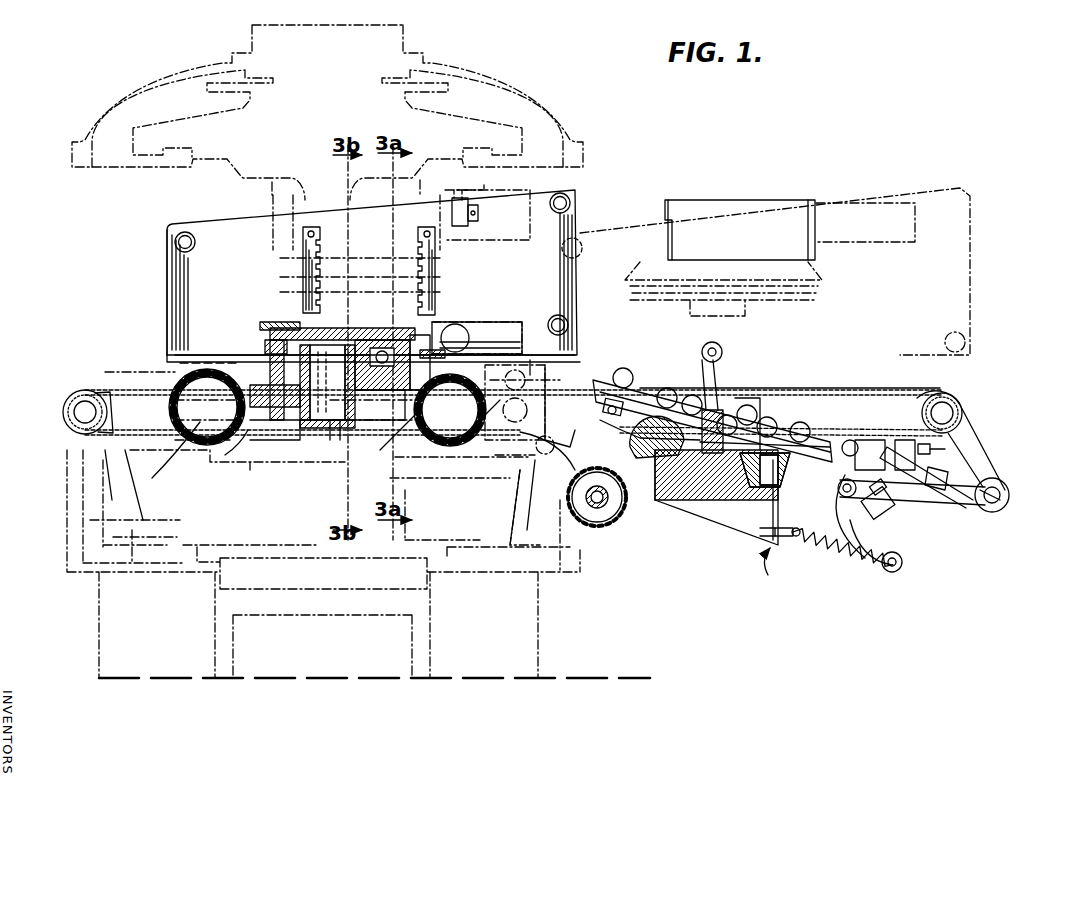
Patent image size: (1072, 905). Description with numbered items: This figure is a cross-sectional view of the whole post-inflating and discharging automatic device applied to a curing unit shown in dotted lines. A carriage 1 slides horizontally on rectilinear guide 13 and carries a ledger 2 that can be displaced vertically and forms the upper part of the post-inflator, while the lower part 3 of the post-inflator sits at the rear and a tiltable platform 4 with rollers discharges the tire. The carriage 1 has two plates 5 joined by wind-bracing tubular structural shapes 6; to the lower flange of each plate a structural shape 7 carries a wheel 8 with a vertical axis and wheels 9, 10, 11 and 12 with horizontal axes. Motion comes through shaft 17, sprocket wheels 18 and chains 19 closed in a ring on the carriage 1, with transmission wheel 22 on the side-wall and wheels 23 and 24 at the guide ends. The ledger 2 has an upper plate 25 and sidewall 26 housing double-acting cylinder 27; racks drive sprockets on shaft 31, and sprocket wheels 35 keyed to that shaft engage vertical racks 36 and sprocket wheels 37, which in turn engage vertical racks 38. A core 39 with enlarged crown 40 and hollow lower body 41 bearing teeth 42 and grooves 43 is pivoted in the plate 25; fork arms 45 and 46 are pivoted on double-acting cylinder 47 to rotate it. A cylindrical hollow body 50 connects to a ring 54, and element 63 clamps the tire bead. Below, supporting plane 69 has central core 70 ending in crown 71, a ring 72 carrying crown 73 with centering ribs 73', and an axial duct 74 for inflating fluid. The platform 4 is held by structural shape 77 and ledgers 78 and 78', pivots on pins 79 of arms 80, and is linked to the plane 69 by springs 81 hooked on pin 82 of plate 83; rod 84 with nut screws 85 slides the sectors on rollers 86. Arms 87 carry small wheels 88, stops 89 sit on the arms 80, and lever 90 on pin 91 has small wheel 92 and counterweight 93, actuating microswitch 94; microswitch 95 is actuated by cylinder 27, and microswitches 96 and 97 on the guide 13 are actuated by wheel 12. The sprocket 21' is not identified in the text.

The carriage 1 is at (162, 266).
The ledger 2 is at (820, 297).
The lower part of the post-inflator 3 is at (716, 524).
The tiltable platform 4 is at (760, 398).
The plates 5 is at (215, 232).
The wind-bracing tubular structural shapes 6 is at (570, 323).
The structural shape 7 is at (196, 356).
The wheel 8 is at (338, 430).
The wheel 9 is at (180, 362).
The wheel 10 is at (155, 468).
The wheel 11 is at (531, 360).
The wheel 12 is at (544, 380).
The rectilinear guide 13 is at (795, 390).
The shaft 17 is at (595, 525).
The sprocket wheels 18 is at (610, 508).
The chains 19 is at (822, 390).
The link 21' is at (529, 502).
The transmission wheel 22 is at (650, 427).
The transmission wheel 23 is at (70, 395).
The transmission wheel 24 is at (955, 400).
The upper plate 25 is at (268, 342).
The sidewall 26 is at (275, 330).
The double-acting cylinder 27 is at (500, 324).
The shaft 31 is at (382, 345).
The sprocket wheels 35 is at (430, 350).
The vertical racks 36 is at (426, 232).
The sprocket wheels 37 is at (325, 428).
The vertical racks 38 is at (313, 248).
The core 39 is at (272, 320).
The enlarged crown 40 is at (272, 345).
The lower body 41 is at (292, 410).
The teeth 42 is at (375, 425).
The grooves 43 is at (305, 430).
The fork arm 45 is at (460, 328).
The fork arm 46 is at (440, 412).
The double-acting cylinder 47 is at (470, 338).
The cylindrical hollow body 50 is at (327, 382).
The ring 54 is at (205, 440).
The element 63 is at (233, 452).
The supporting plane 69 is at (690, 495).
The central core 70 is at (712, 495).
The crown 71 is at (733, 408).
The ring 72 is at (765, 485).
The crown 73 is at (828, 479).
The ribs 73' is at (624, 443).
The duct 74 is at (735, 490).
The structural shape 77 is at (975, 505).
The ledger 78 is at (941, 508).
The ledger 78' is at (562, 427).
The pins 79 is at (1010, 488).
The arms 80 is at (965, 430).
The springs 81 is at (850, 560).
The pin 82 is at (888, 570).
The plate 83 is at (900, 566).
The rod 84 is at (622, 396).
The nut screws 85 is at (620, 418).
The rollers 86 is at (945, 500).
The arms 87 is at (722, 368).
The small wheel 88 is at (716, 345).
The stops 89 is at (960, 478).
The lever 90 is at (915, 530).
The pin 91 is at (830, 555).
The small wheel 92 is at (935, 453).
The adjustable counterweight 93 is at (800, 540).
The microswitch 94 is at (885, 517).
The microswitch 95 is at (478, 213).
The microswitch 96 is at (870, 440).
The microswitch 97 is at (905, 440).